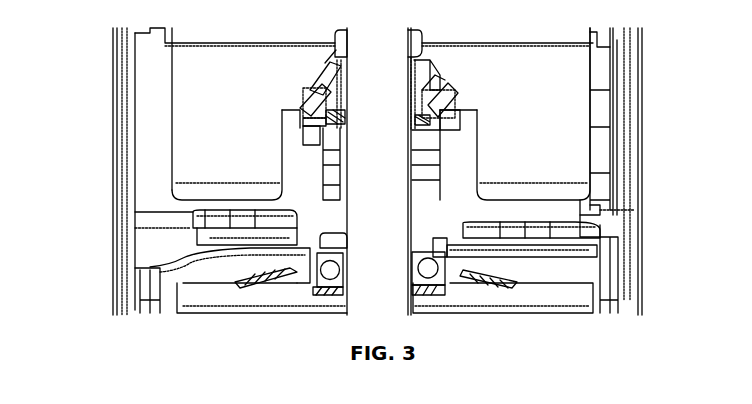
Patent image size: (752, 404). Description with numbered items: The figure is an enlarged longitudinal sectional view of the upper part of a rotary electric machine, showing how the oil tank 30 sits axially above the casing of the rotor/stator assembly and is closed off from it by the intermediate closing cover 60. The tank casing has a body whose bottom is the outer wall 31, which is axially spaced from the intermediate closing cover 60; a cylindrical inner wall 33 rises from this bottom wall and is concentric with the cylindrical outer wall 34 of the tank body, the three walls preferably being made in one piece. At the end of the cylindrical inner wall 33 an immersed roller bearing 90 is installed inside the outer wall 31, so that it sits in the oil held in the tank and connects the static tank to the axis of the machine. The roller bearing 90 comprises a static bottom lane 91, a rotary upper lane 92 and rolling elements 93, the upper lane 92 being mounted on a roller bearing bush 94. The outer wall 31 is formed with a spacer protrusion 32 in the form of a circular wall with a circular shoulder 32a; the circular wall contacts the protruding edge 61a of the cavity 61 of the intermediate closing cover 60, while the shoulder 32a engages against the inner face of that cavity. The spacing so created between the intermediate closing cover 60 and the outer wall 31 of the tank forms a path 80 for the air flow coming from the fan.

The oil tank 30 is at (637, 105).
The outer wall 31 is at (205, 205).
The spacer protrusion 32 is at (290, 240).
The circular shoulder 32a is at (316, 260).
The cylindrical inner wall 33 is at (462, 172).
The cylindrical outer wall 34 is at (603, 141).
The intermediate closing cover 60 is at (224, 270).
The cavity 61 is at (457, 272).
The protruding edge 61a is at (457, 250).
The path 80 is at (141, 238).
The roller bearing 90 is at (453, 121).
The static bottom lane 91 is at (300, 121).
The rotary upper lane 92 is at (317, 97).
The rolling elements 93 is at (313, 110).
The roller bearing bush 94 is at (333, 70).